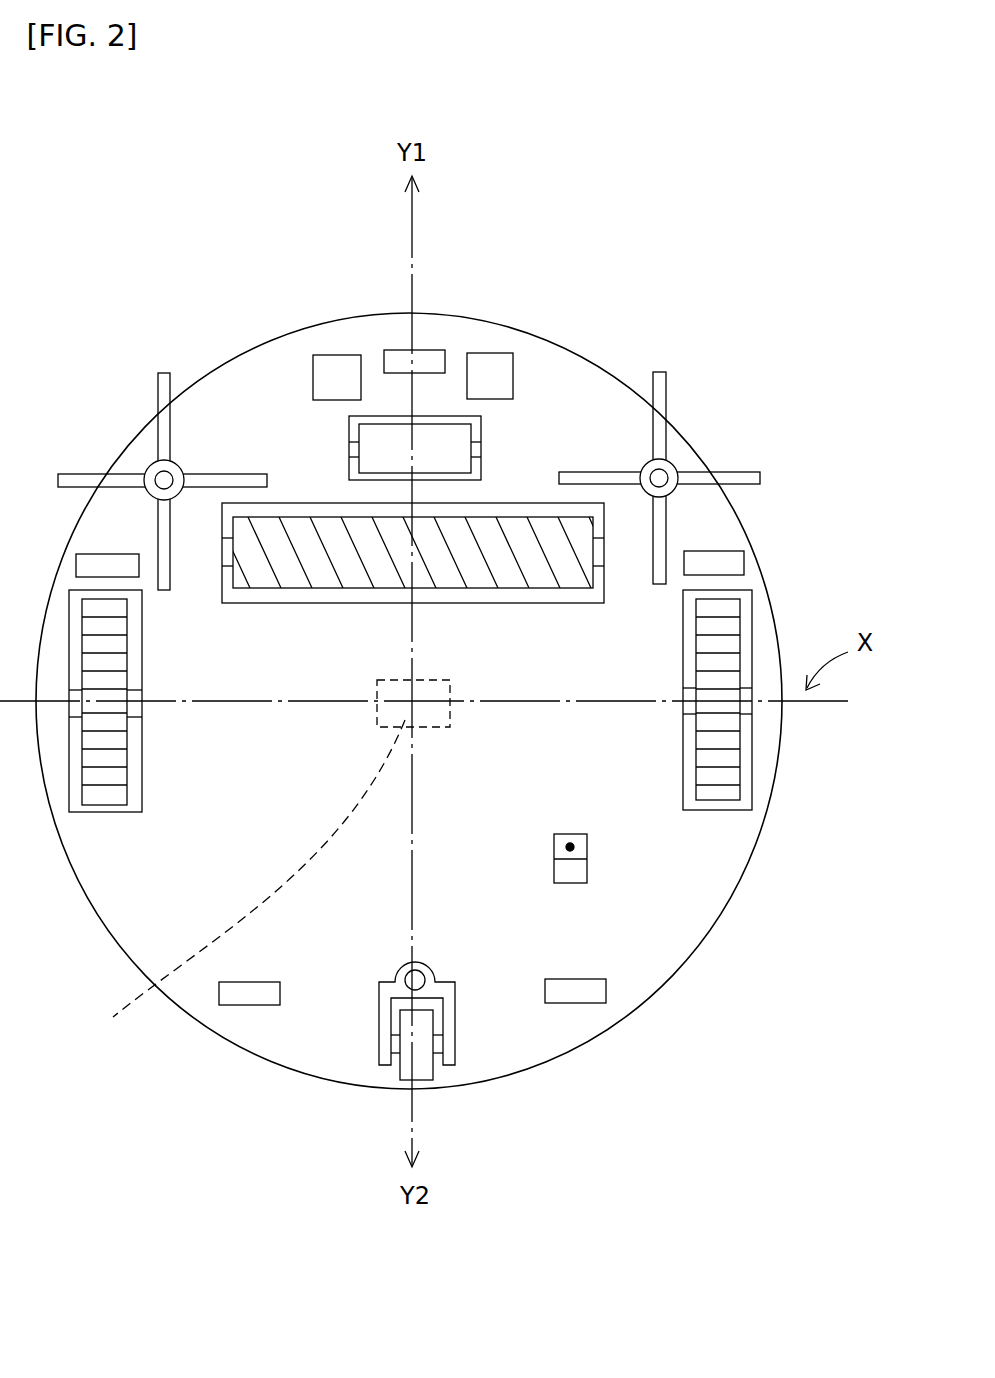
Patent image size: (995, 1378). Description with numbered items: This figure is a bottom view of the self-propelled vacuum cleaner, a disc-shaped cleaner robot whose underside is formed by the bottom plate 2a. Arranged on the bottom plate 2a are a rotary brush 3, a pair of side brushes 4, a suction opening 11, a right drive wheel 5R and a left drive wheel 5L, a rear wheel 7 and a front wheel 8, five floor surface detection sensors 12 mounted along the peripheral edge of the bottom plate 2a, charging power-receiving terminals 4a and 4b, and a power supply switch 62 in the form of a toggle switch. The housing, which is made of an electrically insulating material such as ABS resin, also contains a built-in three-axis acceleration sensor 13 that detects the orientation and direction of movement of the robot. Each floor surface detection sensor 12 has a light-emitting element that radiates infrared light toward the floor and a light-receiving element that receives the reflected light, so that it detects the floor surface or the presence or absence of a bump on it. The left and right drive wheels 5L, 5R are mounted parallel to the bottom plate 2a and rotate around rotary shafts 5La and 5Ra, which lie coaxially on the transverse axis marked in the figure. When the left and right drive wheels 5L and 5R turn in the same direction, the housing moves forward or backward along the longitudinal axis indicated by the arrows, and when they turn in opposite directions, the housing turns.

The bottom plate 2a is at (630, 990).
The rotary brush 3 is at (428, 573).
The side brushes 4 is at (158, 394).
The charging power-receiving terminal 4a is at (503, 363).
The charging power-receiving terminal 4b is at (323, 368).
The right drive wheel 5R is at (113, 775).
The rotary shaft 5Ra is at (80, 690).
The left drive wheel 5L is at (712, 770).
The rotary shaft 5La is at (747, 686).
The rear wheel 7 is at (430, 1068).
The front wheel 8 is at (375, 448).
The suction opening 11 is at (523, 512).
The floor surface detection sensors 12 is at (430, 362).
The three-axis acceleration sensor 13 is at (247, 880).
The power supply switch 62 is at (587, 884).